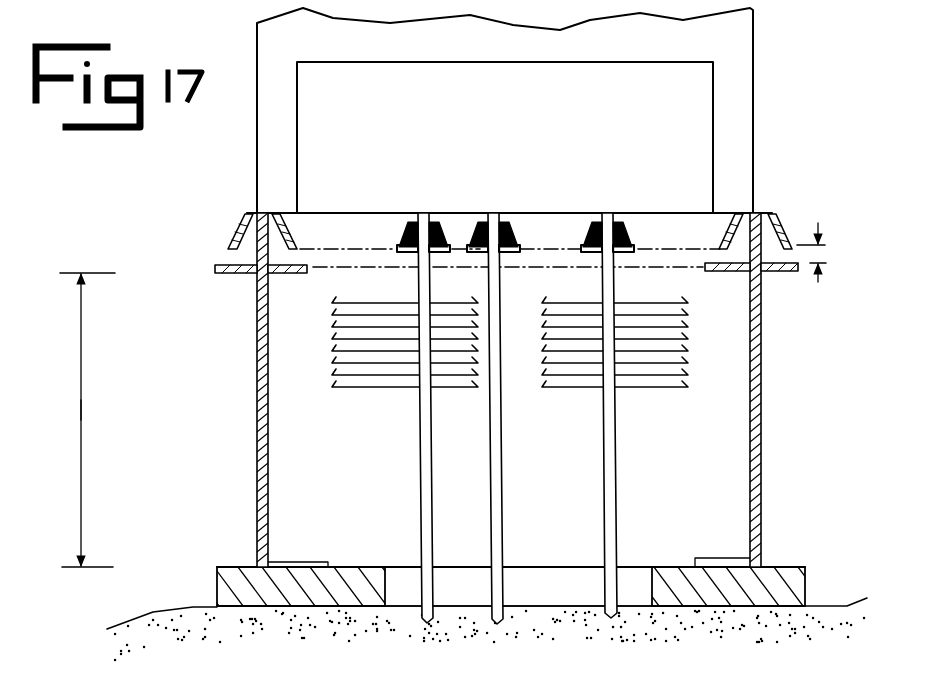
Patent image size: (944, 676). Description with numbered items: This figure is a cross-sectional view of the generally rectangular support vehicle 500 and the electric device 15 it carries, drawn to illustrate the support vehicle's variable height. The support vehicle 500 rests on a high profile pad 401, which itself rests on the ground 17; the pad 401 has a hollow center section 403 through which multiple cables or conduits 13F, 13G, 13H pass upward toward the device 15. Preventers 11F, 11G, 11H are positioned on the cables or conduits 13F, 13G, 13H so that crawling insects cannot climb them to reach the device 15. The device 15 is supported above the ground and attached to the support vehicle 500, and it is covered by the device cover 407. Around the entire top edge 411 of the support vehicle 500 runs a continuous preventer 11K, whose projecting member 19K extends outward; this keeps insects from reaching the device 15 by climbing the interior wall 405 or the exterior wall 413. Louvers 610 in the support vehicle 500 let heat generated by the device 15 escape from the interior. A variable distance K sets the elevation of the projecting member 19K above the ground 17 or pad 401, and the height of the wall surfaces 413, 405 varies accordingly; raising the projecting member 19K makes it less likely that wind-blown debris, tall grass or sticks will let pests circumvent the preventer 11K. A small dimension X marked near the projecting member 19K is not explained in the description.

The device 15 is at (320, 120).
The device cover 407 is at (755, 125).
The top edge 411 is at (257, 213).
The preventer 11K is at (227, 228).
The projecting member 19K is at (212, 267).
The support vehicle 500 is at (256, 377).
The preventer 11F is at (398, 222).
The preventer 11G is at (470, 222).
The preventer 11H is at (584, 222).
The louvers 610 is at (692, 352).
The cable or conduit 13F is at (455, 463).
The cable or conduit 13G is at (503, 472).
The cable or conduit 13H is at (681, 455).
The interior wall 405 is at (269, 468).
The exterior wall 413 is at (257, 497).
The pad 401 is at (783, 567).
The hollow center section 403 is at (533, 590).
The ground 17 is at (180, 623).
The variable distance K is at (87, 420).
The dimension X is at (821, 252).